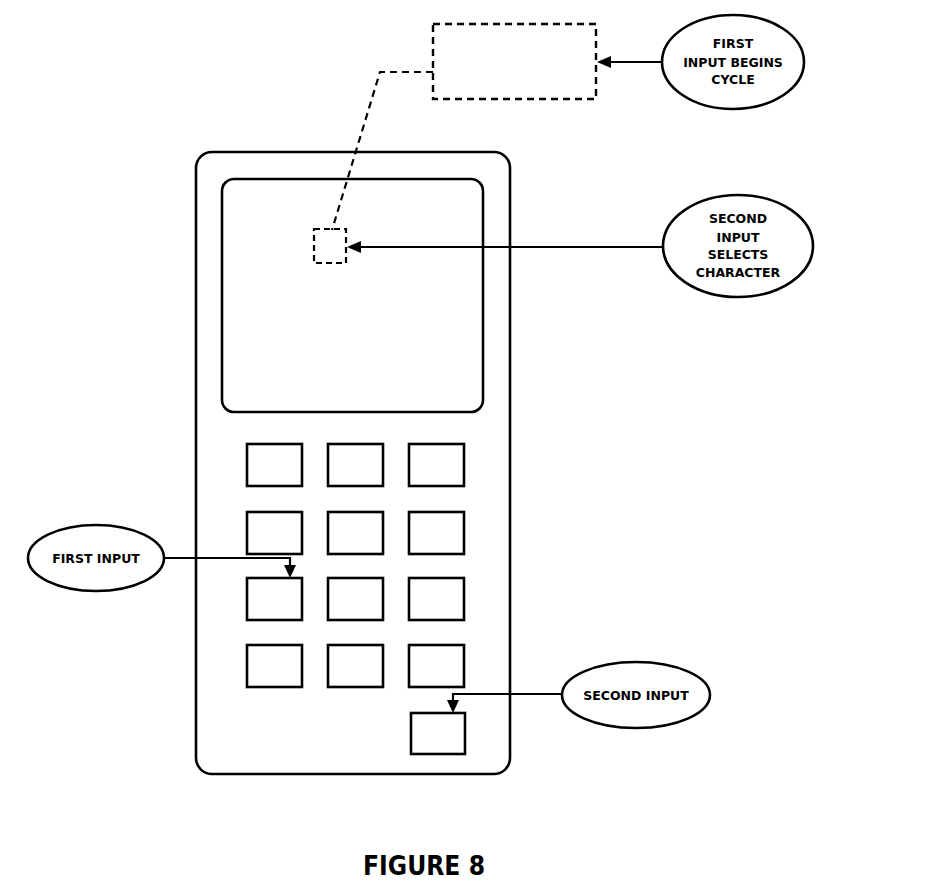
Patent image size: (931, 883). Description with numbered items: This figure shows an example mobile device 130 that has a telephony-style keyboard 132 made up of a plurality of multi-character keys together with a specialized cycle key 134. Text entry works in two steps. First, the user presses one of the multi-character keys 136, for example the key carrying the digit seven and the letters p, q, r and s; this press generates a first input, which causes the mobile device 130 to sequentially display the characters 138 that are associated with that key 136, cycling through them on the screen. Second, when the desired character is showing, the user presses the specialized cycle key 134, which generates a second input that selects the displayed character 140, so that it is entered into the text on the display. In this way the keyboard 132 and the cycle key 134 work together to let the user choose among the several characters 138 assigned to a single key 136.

The mobile device 130 is at (195, 272).
The telephony-style keyboard 132 is at (496, 466).
The cycle key 134 is at (410, 727).
The multi-character key 136 is at (250, 604).
The characters 138 is at (507, 23).
The displayed character 140 is at (335, 265).